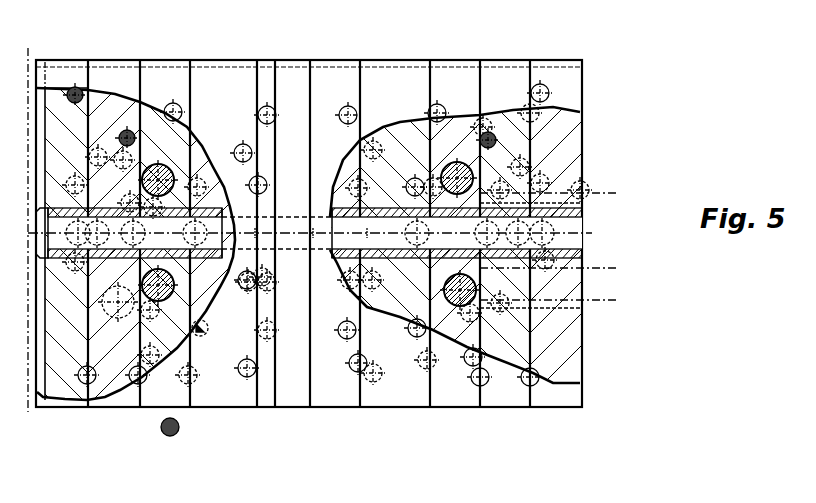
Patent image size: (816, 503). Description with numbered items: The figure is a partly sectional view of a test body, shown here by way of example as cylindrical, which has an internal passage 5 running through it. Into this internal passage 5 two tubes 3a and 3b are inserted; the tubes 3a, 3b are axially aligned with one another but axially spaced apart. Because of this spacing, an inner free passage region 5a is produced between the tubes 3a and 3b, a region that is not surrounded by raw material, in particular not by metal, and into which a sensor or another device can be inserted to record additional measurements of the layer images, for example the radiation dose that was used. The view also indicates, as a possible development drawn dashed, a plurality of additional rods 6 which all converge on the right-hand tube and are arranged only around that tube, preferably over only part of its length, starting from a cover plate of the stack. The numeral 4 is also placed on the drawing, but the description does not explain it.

The tube 3a is at (200, 334).
The tube 3b is at (516, 250).
The cam element 4 is at (182, 145).
The internal passage 5 is at (592, 232).
The free passage region 5a is at (353, 237).
The additional rods 6 is at (558, 186).